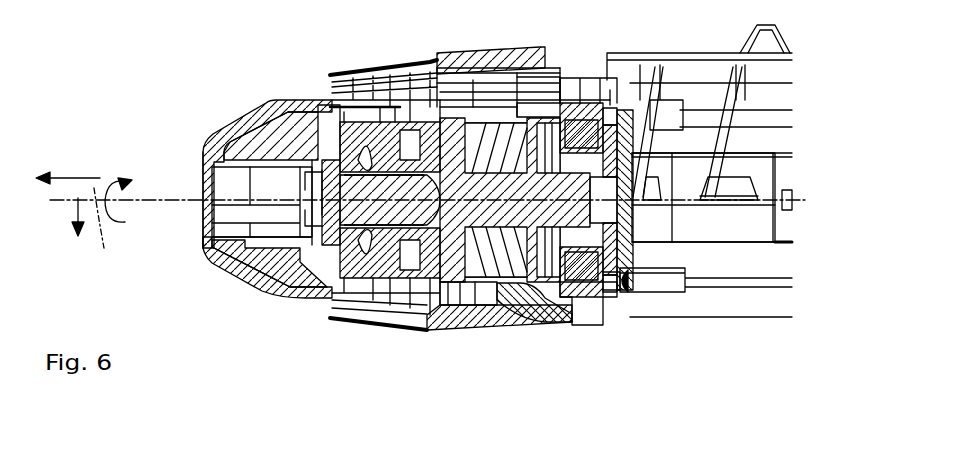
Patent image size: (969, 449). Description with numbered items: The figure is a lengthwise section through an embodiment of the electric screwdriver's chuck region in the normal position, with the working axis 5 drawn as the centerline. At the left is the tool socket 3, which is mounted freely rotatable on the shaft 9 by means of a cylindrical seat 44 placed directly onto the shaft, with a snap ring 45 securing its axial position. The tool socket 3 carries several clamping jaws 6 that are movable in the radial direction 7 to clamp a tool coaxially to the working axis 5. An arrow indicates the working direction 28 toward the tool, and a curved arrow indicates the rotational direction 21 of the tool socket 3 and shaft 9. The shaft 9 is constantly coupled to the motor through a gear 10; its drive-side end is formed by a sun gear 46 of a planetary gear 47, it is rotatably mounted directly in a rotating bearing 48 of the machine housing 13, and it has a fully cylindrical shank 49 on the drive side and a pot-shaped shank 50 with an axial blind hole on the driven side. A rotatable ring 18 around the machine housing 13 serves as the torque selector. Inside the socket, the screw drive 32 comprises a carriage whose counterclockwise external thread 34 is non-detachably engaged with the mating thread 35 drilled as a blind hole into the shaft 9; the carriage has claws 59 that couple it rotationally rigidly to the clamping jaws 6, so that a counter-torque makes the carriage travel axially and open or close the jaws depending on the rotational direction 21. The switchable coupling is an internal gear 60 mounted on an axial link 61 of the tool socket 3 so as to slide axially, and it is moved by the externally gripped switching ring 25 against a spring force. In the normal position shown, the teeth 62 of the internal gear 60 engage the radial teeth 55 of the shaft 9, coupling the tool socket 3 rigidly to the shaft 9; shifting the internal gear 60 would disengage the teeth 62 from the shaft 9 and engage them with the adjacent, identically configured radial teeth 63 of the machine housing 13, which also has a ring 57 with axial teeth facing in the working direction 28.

The tool socket 3 is at (263, 257).
The working axis 5 is at (427, 230).
The clamping jaws 6 is at (283, 133).
The radial direction 7 is at (72, 217).
The shaft 9 is at (592, 240).
The gear 10 is at (695, 143).
The machine housing 13 is at (575, 207).
The rotatable ring 18 is at (527, 52).
The rotational direction 21 is at (116, 172).
The switching ring 25 is at (343, 87).
The working direction 28 is at (69, 176).
The screw drive 32 is at (333, 237).
The thread 34 is at (365, 240).
The mating thread 35 is at (348, 265).
The cylindrical seat 44 is at (385, 147).
The snap ring 45 is at (372, 130).
The sun gear 46 is at (615, 285).
The planetary gear 47 is at (577, 127).
The rotating bearing 48 is at (548, 145).
The fully cylindrical shank 49 is at (530, 133).
The pot-shaped shank 50 is at (410, 160).
The radial teeth 55 is at (500, 283).
The ring 57 is at (478, 193).
The claws 59 is at (307, 240).
The internal gear 60 is at (433, 107).
The axial link 61 is at (427, 277).
The teeth 62 is at (453, 277).
The radial teeth 63 is at (527, 208).